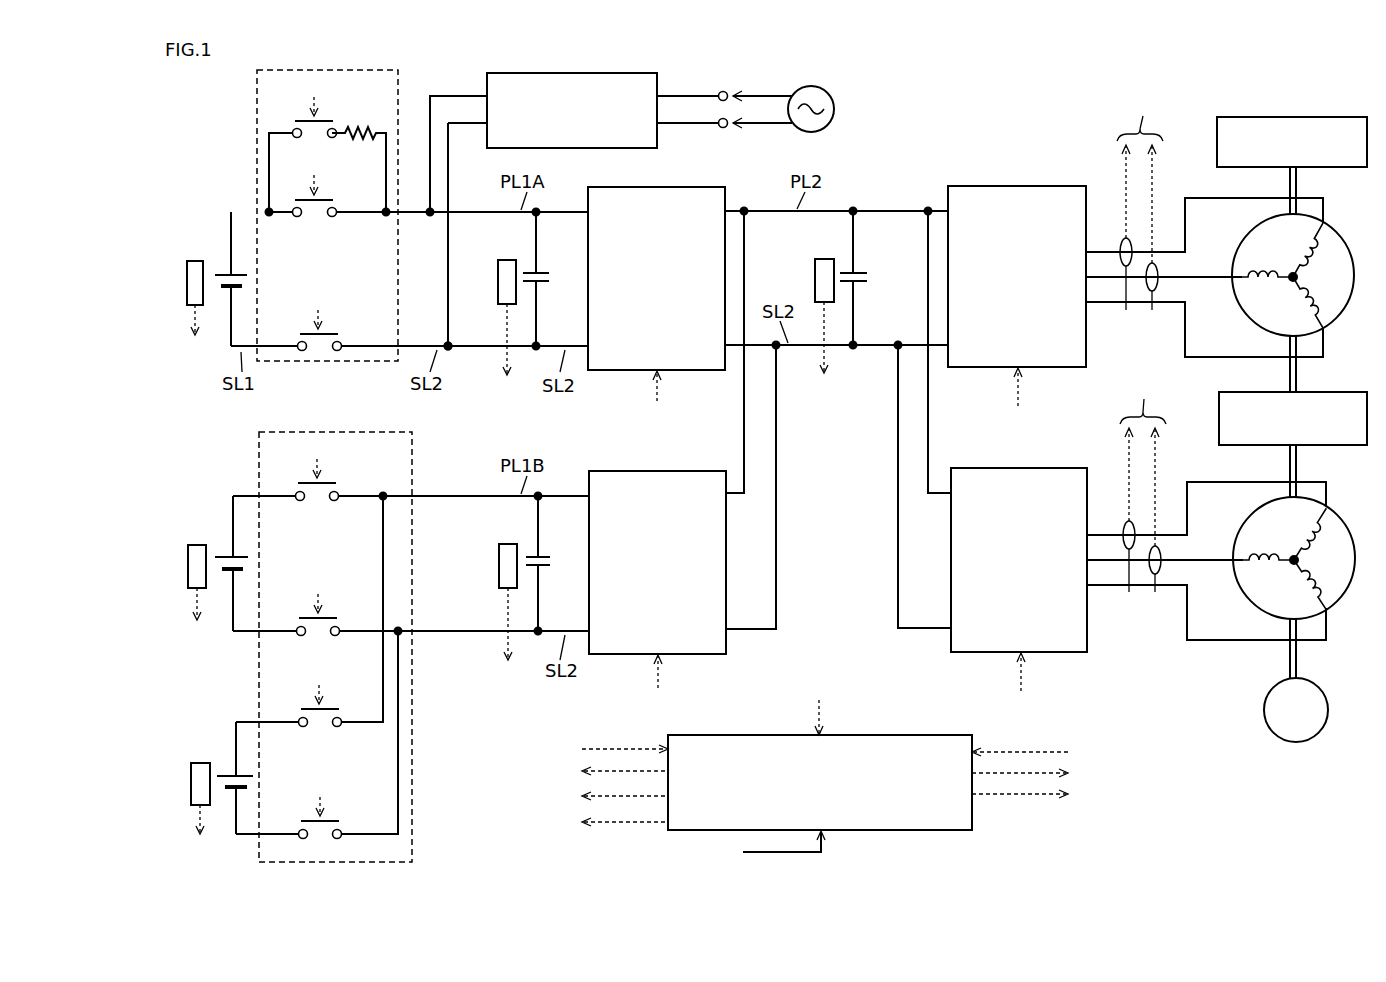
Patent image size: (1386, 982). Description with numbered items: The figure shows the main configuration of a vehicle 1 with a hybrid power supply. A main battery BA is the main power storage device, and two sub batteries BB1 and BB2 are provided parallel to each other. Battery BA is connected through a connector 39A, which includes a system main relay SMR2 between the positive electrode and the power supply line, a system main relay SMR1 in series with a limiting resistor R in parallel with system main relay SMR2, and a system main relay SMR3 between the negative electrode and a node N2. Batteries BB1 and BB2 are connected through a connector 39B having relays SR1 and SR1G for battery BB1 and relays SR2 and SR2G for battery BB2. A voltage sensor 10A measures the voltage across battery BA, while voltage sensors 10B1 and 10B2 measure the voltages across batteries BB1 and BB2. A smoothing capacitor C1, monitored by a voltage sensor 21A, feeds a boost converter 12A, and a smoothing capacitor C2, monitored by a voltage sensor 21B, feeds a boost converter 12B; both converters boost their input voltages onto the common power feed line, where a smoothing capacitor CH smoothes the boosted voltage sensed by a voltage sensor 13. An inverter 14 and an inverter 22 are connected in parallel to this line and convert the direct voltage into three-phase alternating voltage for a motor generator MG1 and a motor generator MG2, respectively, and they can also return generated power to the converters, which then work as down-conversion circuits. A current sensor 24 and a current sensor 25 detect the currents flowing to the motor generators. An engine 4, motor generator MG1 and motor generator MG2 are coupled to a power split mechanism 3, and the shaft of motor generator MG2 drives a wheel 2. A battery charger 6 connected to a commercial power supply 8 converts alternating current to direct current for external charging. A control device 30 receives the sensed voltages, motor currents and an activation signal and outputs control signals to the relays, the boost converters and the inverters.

The vehicle 1 is at (1025, 100).
The wheel 2 is at (1328, 710).
The power split mechanism 3 is at (1340, 392).
The engine 4 is at (1340, 117).
The battery charger 6 is at (583, 148).
The commercial power supply 8 is at (834, 109).
The voltage sensor 10A is at (195, 260).
The voltage sensor 10B1 is at (197, 544).
The voltage sensor 10B2 is at (200, 762).
The boost converter 12A is at (668, 187).
The boost converter 12B is at (668, 471).
The voltage sensor 13 is at (824, 258).
The inverter 14 is at (1040, 186).
The voltage sensor 21A is at (507, 259).
The voltage sensor 21B is at (508, 543).
The inverter 22 is at (1040, 468).
The current sensor 24 is at (1138, 216).
The current sensor 25 is at (1139, 499).
The control device 30 is at (910, 832).
The connector 39A is at (257, 90).
The connector 39B is at (259, 451).
The battery BA is at (226, 270).
The battery BB1 is at (228, 553).
The battery BB2 is at (230, 772).
The smoothing capacitor C1 is at (541, 285).
The smoothing capacitor C2 is at (542, 568).
The smoothing capacitor CH is at (857, 268).
The limiting resistor R is at (367, 128).
The node N2 is at (450, 342).
The system main relay SMR1 is at (296, 123).
The system main relay SMR2 is at (315, 218).
The system main relay SMR3 is at (306, 352).
The relay SR1 is at (316, 502).
The relay SR1G is at (312, 636).
The relay SR2 is at (319, 728).
The relay SR2G is at (322, 838).
The motor generator MG1 is at (1333, 230).
The motor generator MG2 is at (1338, 510).